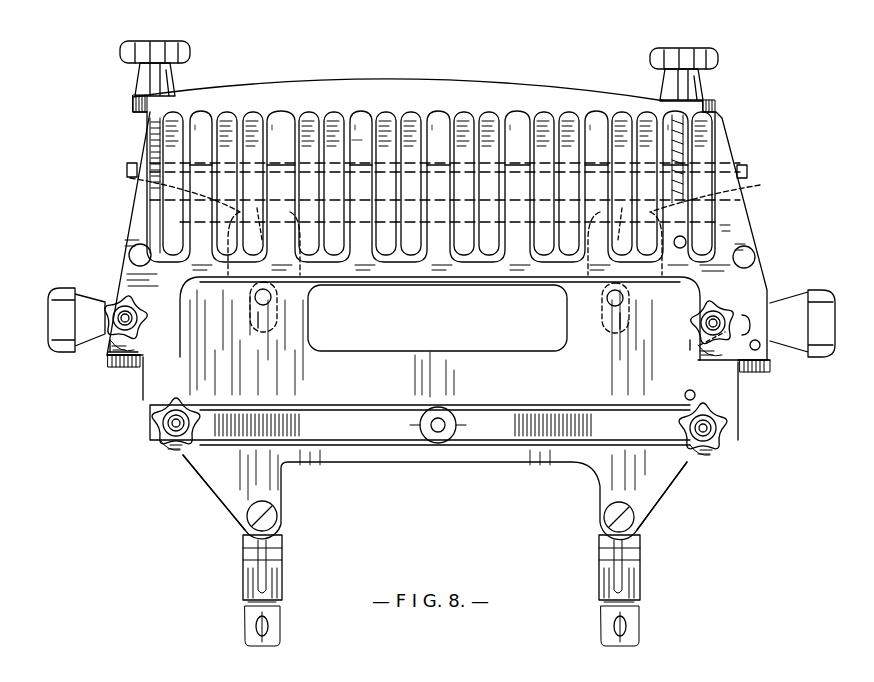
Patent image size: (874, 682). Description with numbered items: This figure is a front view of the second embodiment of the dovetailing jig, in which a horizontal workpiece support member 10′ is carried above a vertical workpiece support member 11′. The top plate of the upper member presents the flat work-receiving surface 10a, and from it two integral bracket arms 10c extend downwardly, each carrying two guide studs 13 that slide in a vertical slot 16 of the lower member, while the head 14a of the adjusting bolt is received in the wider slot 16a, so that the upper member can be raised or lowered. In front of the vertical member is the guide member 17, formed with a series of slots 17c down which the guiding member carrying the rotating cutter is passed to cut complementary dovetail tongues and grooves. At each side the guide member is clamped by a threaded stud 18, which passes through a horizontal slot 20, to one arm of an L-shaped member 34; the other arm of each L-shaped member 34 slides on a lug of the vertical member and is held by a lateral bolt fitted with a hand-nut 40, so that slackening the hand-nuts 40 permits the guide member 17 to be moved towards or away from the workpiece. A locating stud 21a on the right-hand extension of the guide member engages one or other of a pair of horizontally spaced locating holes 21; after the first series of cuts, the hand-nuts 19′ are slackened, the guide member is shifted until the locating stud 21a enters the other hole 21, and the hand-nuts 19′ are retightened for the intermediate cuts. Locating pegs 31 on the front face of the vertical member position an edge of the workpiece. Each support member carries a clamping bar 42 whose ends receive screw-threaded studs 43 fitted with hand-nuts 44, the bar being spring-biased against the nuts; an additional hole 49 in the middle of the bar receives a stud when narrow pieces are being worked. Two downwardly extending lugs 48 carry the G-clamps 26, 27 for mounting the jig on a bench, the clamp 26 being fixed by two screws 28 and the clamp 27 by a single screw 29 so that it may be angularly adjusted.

The workpiece support member 10′ is at (127, 170).
The work-receiving surface 10a is at (357, 163).
The bracket arm 10c is at (438, 318).
The workpiece support member 11′ is at (392, 465).
The guide stud 13 is at (612, 302).
The head 14a is at (292, 268).
The vertical slot 16 is at (262, 330).
The wider slot 16a is at (244, 310).
The guide member 17 is at (479, 116).
The slot 17c is at (198, 128).
The threaded stud 18 is at (118, 306).
The hand-nut 19′ is at (108, 342).
The horizontal slot 20 is at (750, 322).
The locating hole 21 is at (700, 348).
The locating stud 21a is at (760, 348).
The G-clamp 26 is at (633, 583).
The G-clamp 27 is at (245, 583).
The screw 28 is at (635, 518).
The screw 29 is at (278, 516).
The locating peg 31 is at (686, 244).
The L-shaped member 34 is at (125, 364).
The hand-nut 40 is at (62, 320).
The clamping bar 42 is at (420, 82).
The screw-threaded stud 43 is at (170, 422).
The hand-nut 44 is at (165, 54).
The lug 48 is at (220, 465).
The additional hole 49 is at (443, 423).